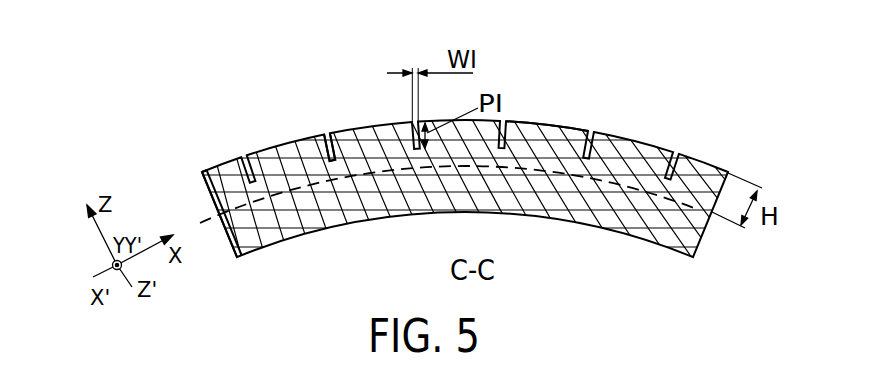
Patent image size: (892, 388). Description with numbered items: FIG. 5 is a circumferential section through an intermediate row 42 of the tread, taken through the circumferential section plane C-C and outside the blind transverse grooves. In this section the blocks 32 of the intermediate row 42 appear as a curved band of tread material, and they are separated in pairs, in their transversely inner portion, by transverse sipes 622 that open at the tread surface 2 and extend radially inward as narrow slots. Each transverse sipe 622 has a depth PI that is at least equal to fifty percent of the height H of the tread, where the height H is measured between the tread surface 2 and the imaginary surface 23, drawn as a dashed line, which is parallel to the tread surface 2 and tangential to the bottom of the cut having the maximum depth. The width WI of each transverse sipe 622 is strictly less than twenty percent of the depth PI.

The tread surface 2 is at (705, 165).
The blocks 32 is at (557, 128).
The transverse sipes 622 is at (325, 132).
The intermediate row 42 is at (201, 188).
The imaginary surface 23 is at (693, 208).